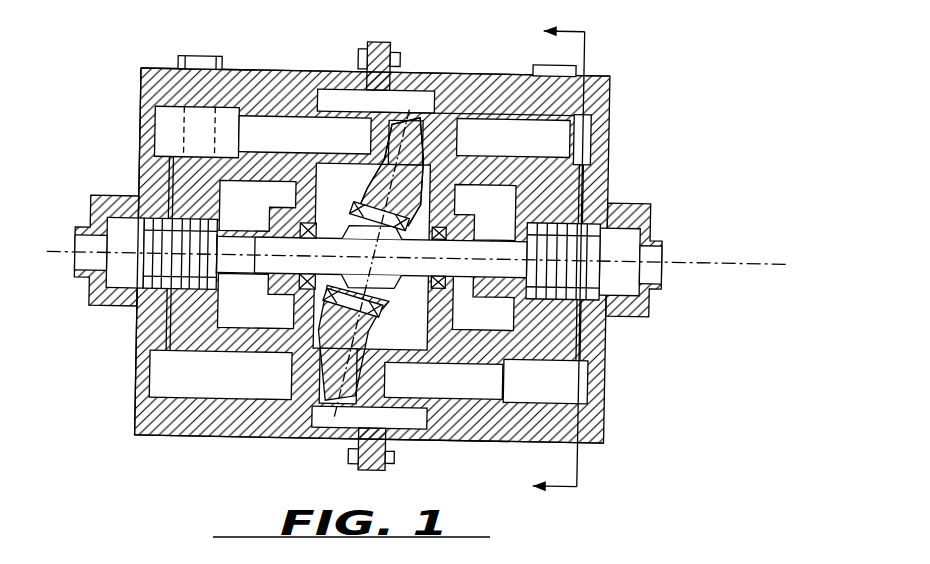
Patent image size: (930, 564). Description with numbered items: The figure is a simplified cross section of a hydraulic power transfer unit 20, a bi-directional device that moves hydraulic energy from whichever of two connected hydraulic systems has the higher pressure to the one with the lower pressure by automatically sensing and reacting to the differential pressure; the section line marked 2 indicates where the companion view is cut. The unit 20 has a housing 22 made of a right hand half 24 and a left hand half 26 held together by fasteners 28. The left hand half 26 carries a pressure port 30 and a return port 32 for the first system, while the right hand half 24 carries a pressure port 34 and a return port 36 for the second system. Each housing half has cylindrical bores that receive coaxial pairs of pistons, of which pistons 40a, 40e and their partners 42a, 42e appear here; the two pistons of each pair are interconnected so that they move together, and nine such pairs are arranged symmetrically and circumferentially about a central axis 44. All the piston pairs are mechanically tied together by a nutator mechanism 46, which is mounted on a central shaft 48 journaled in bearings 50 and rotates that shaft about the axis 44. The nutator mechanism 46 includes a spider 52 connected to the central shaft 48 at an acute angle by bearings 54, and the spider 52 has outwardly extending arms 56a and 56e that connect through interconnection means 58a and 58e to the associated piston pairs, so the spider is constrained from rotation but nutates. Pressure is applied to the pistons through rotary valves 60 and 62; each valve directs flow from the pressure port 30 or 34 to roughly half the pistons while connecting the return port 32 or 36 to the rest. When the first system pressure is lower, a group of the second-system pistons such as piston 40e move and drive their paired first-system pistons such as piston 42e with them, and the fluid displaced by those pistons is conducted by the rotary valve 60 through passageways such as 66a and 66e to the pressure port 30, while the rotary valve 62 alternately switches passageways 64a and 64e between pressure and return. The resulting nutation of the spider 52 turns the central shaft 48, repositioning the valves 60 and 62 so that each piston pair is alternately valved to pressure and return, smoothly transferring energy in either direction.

The hydraulic power transfer unit 20 is at (623, 119).
The housing 22 is at (330, 66).
The right hand half 24 is at (473, 434).
The left hand half 26 is at (181, 436).
The fasteners 28 is at (375, 74).
The pressure port 30 is at (205, 54).
The return port 32 is at (79, 251).
The pressure port 34 is at (562, 57).
The return port 36 is at (666, 244).
The piston 40a is at (493, 107).
The piston 40e is at (432, 400).
The piston 42a is at (313, 109).
The piston 42e is at (236, 400).
The central axis 44 is at (773, 252).
The nutator mechanism 46 is at (422, 193).
The central shaft 48 is at (356, 224).
The bearings 50 is at (293, 292).
The spider 52 is at (374, 181).
The bearings 54 is at (390, 222).
The arm 56a is at (441, 132).
The arm 56e is at (341, 412).
The interconnection means 58a is at (398, 120).
The interconnection means 58e is at (318, 402).
The rotary valve 60 is at (144, 275).
The rotary valve 62 is at (612, 297).
The passageway 64a is at (605, 170).
The passageway 64e is at (605, 352).
The passageway 66a is at (170, 178).
The passageway 66e is at (170, 340).
The section line 2- 2 is at (587, 257).